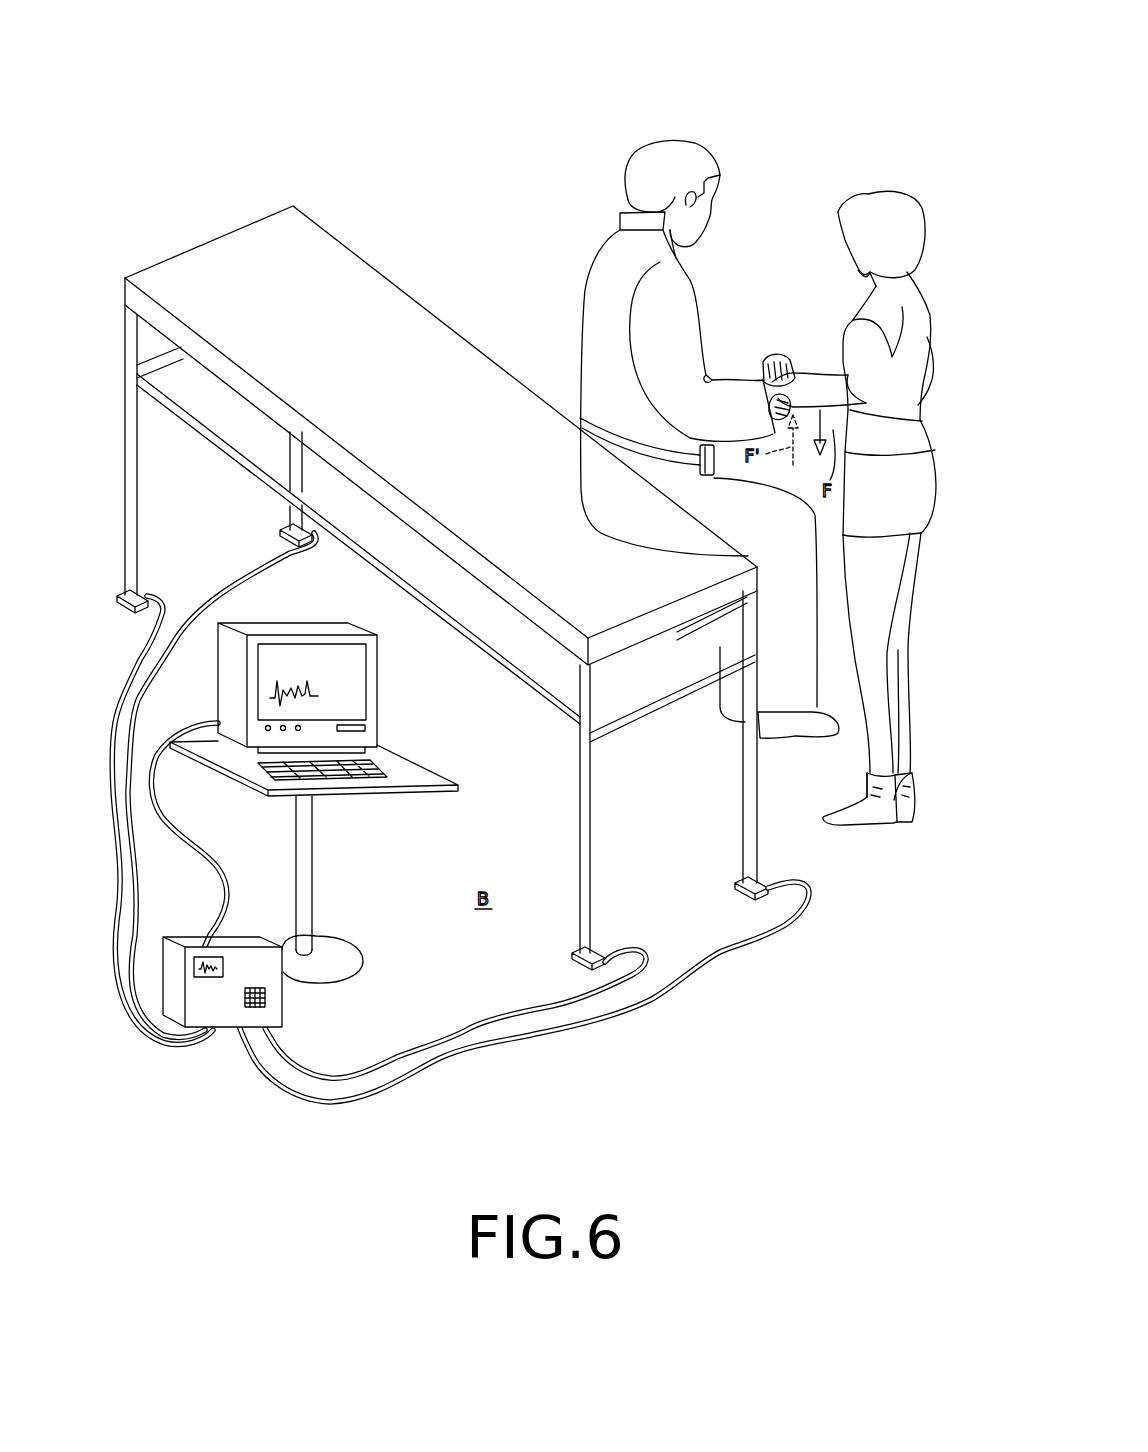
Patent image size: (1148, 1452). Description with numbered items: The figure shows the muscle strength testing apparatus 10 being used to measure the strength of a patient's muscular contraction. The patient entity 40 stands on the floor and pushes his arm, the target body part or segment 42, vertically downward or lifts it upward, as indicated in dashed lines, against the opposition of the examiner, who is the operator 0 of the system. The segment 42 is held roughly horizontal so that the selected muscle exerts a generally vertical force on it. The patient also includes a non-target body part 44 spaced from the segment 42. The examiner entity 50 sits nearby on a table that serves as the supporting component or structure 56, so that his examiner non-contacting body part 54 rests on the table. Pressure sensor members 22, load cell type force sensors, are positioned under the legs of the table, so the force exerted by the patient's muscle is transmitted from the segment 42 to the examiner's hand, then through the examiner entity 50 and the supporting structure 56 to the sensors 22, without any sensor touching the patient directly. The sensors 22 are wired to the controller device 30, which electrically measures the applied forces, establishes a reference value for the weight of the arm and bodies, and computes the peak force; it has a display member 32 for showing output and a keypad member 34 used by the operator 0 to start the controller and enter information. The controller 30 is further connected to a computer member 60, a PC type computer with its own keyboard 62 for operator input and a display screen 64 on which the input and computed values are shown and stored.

The muscle strength testing apparatus 10 is at (509, 78).
The pressure sensor member 22 is at (288, 541).
The controller device 30 is at (252, 947).
The display member 32 is at (212, 955).
The keypad member 34 is at (268, 1000).
The patient entity 40 is at (866, 566).
The target body part or segment 42 is at (905, 418).
The patient non-target body part 44 is at (927, 335).
The examiner entity 50 is at (654, 439).
The examiner non-contacting body part 54 is at (604, 250).
The supporting component or structure 56 is at (337, 238).
The computer member 60 is at (327, 662).
The keyboard 62 is at (388, 770).
The display screen 64 is at (327, 660).
The operator 0 is at (690, 278).